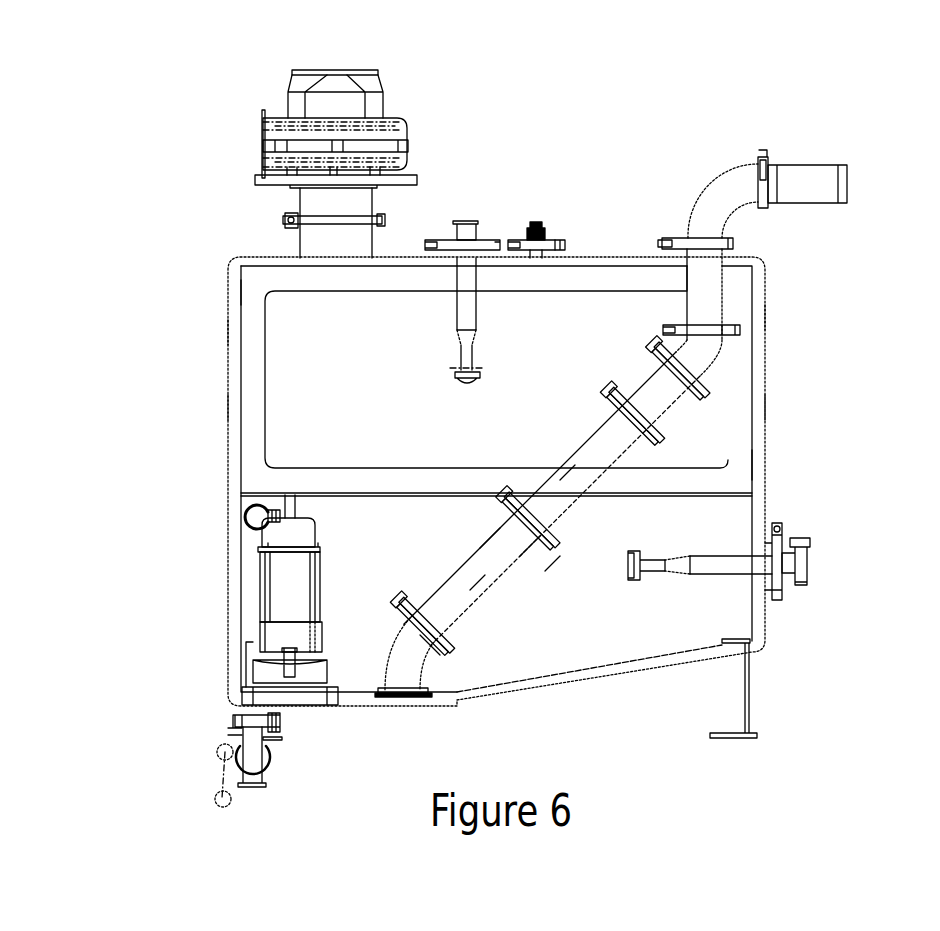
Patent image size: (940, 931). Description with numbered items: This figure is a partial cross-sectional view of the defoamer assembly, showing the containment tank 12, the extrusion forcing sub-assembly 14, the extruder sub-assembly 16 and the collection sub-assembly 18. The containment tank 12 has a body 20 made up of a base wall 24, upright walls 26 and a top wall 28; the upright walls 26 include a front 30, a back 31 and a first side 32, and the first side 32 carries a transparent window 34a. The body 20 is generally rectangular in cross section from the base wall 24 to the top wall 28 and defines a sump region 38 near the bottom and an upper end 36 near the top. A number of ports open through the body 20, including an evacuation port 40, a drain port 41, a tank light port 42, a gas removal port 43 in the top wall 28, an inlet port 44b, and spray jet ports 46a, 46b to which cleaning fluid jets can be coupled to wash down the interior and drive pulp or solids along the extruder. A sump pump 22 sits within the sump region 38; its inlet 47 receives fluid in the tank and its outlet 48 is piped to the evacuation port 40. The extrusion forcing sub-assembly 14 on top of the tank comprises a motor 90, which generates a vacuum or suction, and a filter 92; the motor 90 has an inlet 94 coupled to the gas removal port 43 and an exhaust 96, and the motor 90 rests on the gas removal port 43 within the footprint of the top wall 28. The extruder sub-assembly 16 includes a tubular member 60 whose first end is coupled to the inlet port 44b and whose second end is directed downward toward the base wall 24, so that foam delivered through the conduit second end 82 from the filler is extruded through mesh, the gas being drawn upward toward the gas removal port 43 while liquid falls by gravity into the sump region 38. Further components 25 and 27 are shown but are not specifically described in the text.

The containment tank 12 is at (798, 468).
The extrusion forcing sub-assembly 14 is at (223, 145).
The extruder sub-assembly 16 is at (720, 372).
The collection sub-assembly 18 is at (821, 143).
The body 20 is at (227, 462).
The sump pump 22 is at (257, 583).
The base wall 24 is at (589, 683).
The side outlet pipe 25 is at (731, 579).
The upright walls 26 is at (227, 331).
The sensor fitting 27 is at (533, 212).
The top wall 28 is at (628, 248).
The front 30 is at (767, 408).
The back 31 is at (227, 408).
The first side 32 is at (252, 293).
The window 34a is at (277, 357).
The upper end 36 is at (767, 318).
The sump region 38 is at (328, 604).
The evacuation port 40 is at (252, 513).
The drain port 41 is at (226, 720).
The tank light port 42 is at (562, 225).
The gas removal port 43 is at (288, 241).
The inlet port 44b is at (730, 255).
The spray jet port 46a is at (789, 527).
The spray jet port 46b is at (485, 210).
The inlet 47 is at (249, 668).
The outlet 48 is at (261, 529).
The tubular member 60 is at (632, 476).
The second end 82 is at (685, 234).
The motor 90 is at (380, 53).
The filter 92 is at (282, 213).
The inlet 94 is at (375, 200).
The exhaust 96 is at (249, 125).